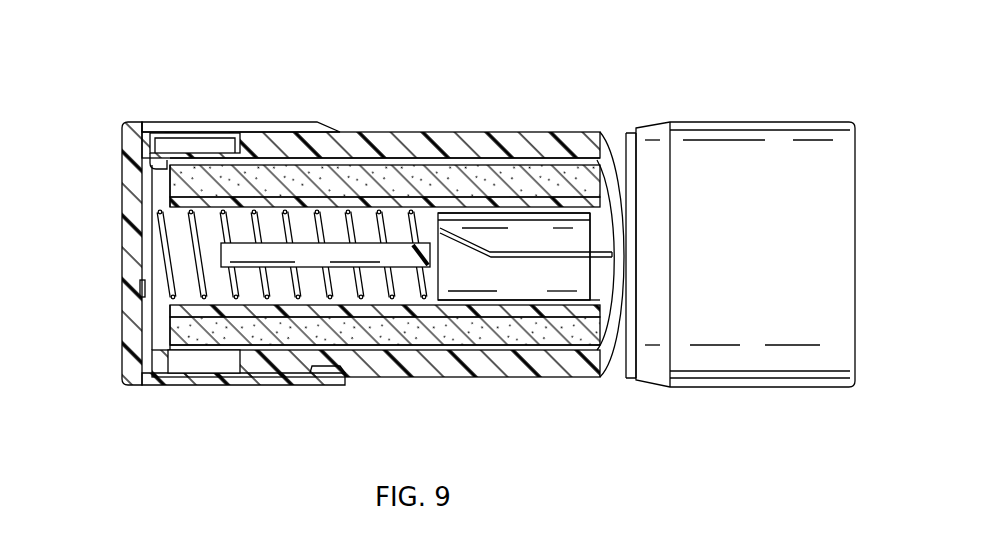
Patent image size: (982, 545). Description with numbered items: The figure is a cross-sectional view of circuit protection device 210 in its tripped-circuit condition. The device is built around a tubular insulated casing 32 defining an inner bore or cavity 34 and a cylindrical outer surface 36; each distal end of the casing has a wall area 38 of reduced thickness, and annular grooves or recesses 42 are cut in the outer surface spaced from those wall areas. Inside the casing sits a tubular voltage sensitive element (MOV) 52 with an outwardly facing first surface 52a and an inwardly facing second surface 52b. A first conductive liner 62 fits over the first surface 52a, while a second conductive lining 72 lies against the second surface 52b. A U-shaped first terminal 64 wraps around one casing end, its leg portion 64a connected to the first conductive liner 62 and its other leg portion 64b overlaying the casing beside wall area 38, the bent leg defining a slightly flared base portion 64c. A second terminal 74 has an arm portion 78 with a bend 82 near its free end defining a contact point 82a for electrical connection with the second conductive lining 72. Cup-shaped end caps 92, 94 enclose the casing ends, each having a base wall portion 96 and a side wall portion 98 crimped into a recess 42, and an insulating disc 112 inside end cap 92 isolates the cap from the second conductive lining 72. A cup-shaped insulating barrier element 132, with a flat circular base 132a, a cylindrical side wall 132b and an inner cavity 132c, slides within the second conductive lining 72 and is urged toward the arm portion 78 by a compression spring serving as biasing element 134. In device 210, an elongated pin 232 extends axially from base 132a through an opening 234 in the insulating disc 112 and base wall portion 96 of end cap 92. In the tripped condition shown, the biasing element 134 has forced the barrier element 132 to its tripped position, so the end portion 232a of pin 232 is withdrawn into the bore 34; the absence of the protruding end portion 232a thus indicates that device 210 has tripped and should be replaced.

The casing 32 is at (458, 130).
The inner bore or cavity 34 is at (497, 163).
The outer surface 36 is at (597, 132).
The wall area of reduced thickness 38 is at (183, 377).
The annular groove or recess 42 is at (315, 385).
The voltage sensitive element (MOV) 52 is at (425, 348).
The first surface 52a is at (457, 345).
The second surface 52b is at (600, 297).
The first conductive liner 62 is at (522, 350).
The first terminal 64 is at (158, 124).
The leg portion 64a is at (162, 180).
The leg portion 64b is at (181, 136).
The flared base portion 64c is at (130, 137).
The second conductive lining 72 is at (423, 165).
The second terminal 74 is at (604, 246).
The arm portion 78 is at (600, 280).
The bend 82 is at (496, 249).
The contact point 82a is at (493, 258).
The end cap 92 is at (256, 120).
The end cap 94 is at (762, 120).
The base wall portion 96 is at (855, 150).
The side wall portion 98 is at (252, 387).
The insulating disc 112 is at (130, 327).
The barrier element 132 is at (548, 312).
The flat circular base 132a is at (432, 283).
The cylindrical side wall 132b is at (528, 160).
The cylindrical inner cavity 132c is at (600, 222).
The biasing element 134 is at (350, 212).
The circuit protection device 210 is at (591, 84).
The pin 232 is at (310, 268).
The end portion 232a is at (248, 258).
The opening 234 is at (130, 245).